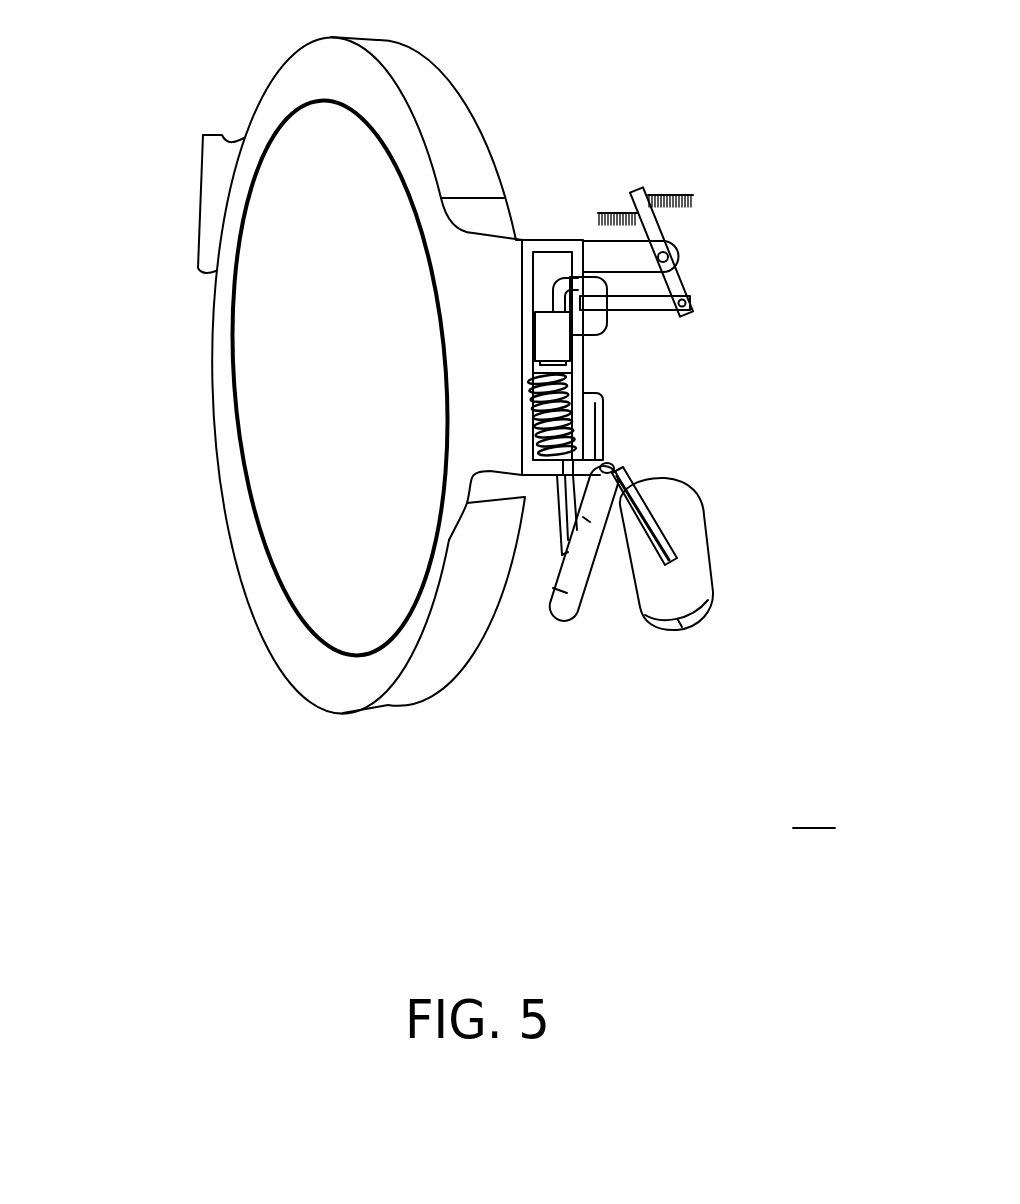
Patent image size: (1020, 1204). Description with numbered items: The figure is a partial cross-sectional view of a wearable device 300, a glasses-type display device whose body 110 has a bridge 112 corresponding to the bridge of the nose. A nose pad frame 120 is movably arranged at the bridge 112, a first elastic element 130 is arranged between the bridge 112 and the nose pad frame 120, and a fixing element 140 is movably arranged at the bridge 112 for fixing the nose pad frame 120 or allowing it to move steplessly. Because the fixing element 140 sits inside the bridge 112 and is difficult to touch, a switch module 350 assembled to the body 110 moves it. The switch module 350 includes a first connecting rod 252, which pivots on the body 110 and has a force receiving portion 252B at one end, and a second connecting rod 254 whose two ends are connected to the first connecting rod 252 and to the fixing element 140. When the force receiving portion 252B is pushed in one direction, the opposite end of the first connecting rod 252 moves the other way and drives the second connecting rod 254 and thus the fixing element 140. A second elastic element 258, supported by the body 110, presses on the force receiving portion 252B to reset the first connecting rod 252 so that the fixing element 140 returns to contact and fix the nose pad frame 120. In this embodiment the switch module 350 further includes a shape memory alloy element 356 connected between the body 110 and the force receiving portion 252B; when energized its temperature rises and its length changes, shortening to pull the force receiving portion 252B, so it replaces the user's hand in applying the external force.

The body 110 is at (218, 198).
The bridge 112 is at (493, 263).
The nose pad frame 120 is at (653, 527).
The first elastic element 130 is at (570, 428).
The fixing element 140 is at (557, 280).
The first connecting rod 252 is at (673, 280).
The force receiving portion 252B is at (633, 190).
The second connecting rod 254 is at (638, 302).
The second elastic element 258 is at (612, 207).
The wearable device 300 is at (814, 812).
The switch module 350 is at (731, 236).
The shape memory alloy element 356 is at (663, 195).